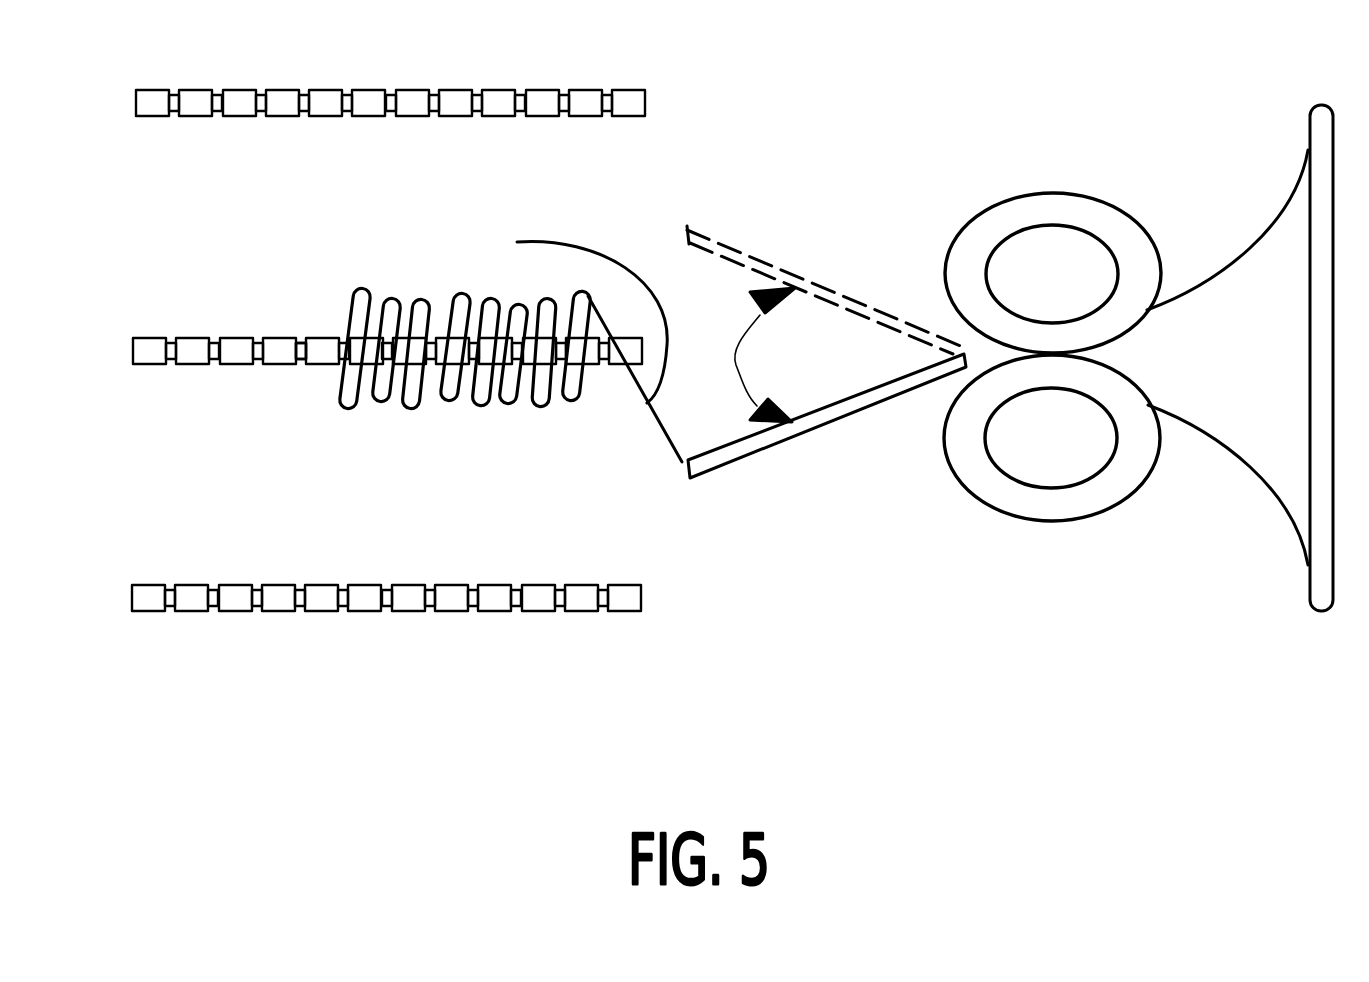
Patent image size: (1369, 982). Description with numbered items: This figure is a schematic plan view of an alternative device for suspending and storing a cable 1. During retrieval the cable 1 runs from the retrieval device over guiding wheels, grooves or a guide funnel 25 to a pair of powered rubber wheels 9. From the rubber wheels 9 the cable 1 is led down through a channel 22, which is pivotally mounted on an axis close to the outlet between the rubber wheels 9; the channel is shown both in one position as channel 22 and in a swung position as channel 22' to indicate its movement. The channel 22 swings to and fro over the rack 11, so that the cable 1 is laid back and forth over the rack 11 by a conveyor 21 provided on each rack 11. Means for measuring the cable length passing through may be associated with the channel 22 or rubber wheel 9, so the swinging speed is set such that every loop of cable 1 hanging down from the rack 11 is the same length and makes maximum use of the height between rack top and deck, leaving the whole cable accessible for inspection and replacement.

The cable 1 is at (463, 300).
The powered rubber wheels 9 is at (970, 477).
The rack 11 is at (303, 347).
The conveyor 21 is at (193, 347).
The channel 22 is at (827, 437).
The channel in swung position 22' is at (825, 211).
The guide funnel 25 is at (1290, 370).